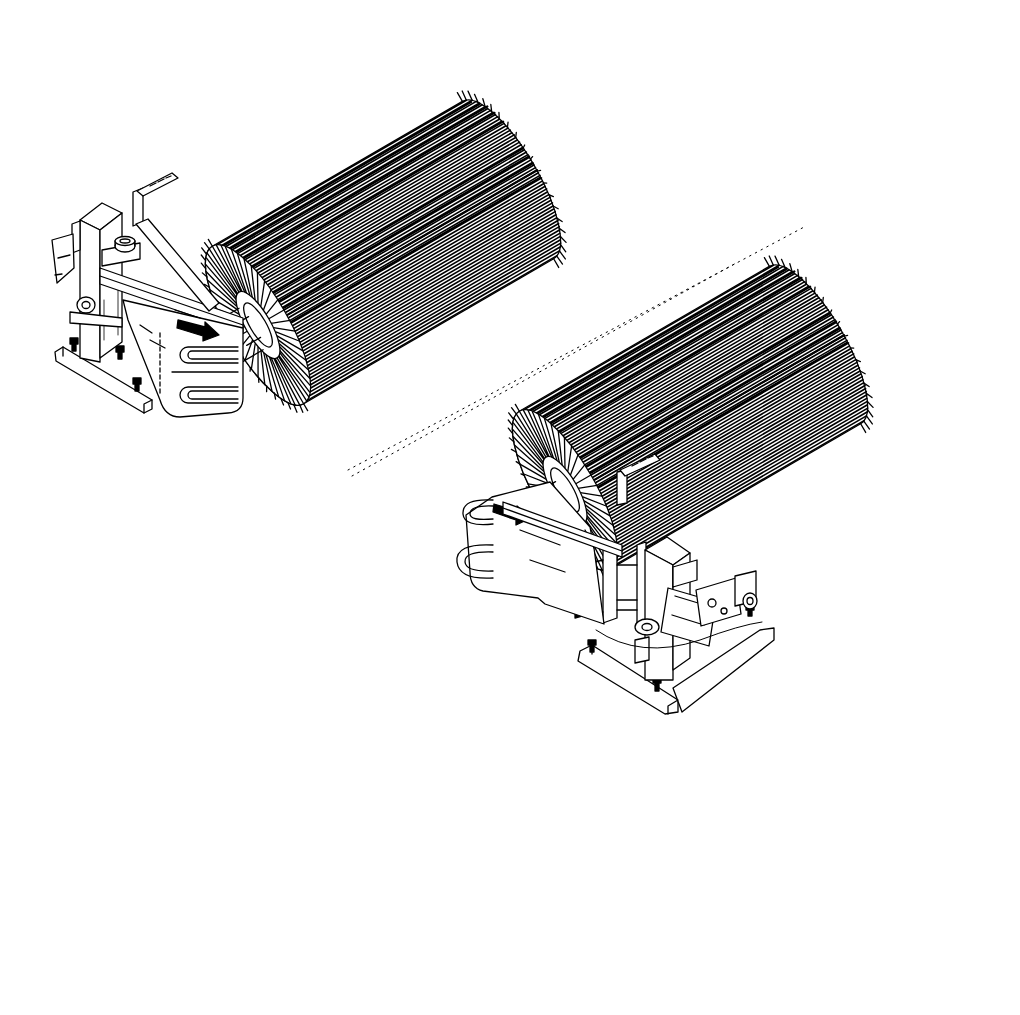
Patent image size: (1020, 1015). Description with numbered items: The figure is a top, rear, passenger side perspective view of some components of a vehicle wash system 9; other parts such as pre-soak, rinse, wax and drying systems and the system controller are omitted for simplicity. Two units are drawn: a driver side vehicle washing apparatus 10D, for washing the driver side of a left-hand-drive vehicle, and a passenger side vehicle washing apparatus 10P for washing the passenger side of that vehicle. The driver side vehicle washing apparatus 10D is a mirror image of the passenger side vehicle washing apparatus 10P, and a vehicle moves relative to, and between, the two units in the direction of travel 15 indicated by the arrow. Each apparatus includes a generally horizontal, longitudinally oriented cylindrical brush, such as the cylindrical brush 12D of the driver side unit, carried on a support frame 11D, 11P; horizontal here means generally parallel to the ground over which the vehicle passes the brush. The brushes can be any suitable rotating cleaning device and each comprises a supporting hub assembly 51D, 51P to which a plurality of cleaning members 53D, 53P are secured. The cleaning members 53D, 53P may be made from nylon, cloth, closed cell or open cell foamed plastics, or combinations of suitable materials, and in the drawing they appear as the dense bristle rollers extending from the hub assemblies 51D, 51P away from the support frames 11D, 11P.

The vehicle wash system 9 is at (721, 93).
The driver side vehicle washing apparatus 10D is at (141, 61).
The passenger side vehicle washing apparatus 10P is at (812, 605).
The support frame 11D is at (255, 441).
The support frame 11P is at (438, 550).
The cylindrical brush 12D is at (540, 159).
The direction of travel 15 is at (897, 174).
The supporting hub assembly 51D is at (245, 244).
The supporting hub assembly 51P is at (515, 453).
The cleaning members 53D is at (445, 121).
The cleaning members 53P is at (805, 466).